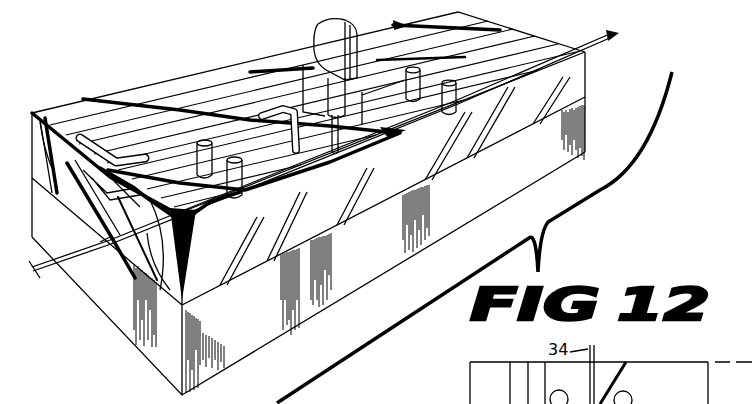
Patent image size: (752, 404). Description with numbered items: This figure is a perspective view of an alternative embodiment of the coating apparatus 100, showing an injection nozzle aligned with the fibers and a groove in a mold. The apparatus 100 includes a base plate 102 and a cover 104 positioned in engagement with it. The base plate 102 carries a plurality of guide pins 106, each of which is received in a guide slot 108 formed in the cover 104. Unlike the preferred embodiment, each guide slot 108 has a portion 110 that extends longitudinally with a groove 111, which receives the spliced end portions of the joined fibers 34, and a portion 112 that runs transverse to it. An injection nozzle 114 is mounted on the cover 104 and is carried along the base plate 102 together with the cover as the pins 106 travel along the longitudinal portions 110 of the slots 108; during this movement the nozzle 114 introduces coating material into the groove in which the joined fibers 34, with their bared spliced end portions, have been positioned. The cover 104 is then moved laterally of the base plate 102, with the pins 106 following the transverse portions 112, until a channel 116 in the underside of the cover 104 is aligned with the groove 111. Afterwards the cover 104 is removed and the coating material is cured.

The joined fibers 34 is at (80, 256).
The apparatus 100 is at (105, 355).
The base plate 102 is at (90, 287).
The cover 104 is at (207, 72).
The guide pins 106 is at (236, 157).
The guide slot 108 is at (395, 136).
The portion 110 is at (280, 152).
The groove 111 is at (105, 247).
The portion 112 is at (107, 150).
The injection nozzle 114 is at (315, 40).
The channel 116 is at (52, 116).